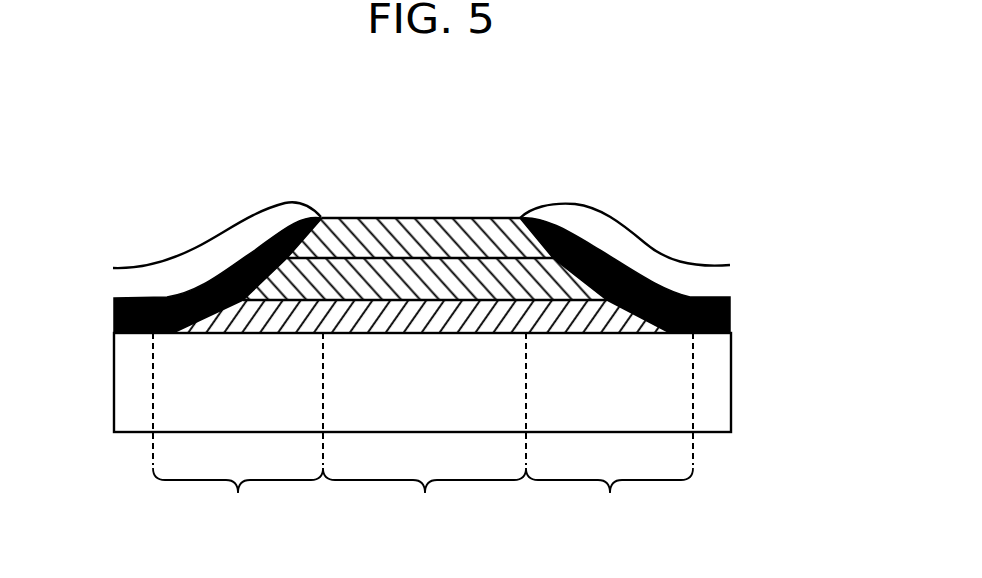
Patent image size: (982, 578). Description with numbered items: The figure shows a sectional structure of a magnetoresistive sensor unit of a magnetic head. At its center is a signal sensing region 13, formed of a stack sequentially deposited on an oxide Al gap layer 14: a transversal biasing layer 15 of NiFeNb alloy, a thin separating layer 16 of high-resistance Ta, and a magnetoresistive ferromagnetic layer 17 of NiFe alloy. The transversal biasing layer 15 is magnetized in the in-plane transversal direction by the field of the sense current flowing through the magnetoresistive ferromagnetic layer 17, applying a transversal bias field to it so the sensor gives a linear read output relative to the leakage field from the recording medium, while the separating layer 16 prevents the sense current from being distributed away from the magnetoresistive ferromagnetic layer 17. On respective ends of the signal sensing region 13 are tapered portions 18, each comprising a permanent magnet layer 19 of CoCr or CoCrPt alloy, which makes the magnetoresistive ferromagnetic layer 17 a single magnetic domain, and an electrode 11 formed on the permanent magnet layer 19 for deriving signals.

The electrodes 11 is at (233, 247).
The signal sensing region 13 is at (424, 502).
The oxide Al gap layer 14 is at (715, 383).
The transversal biasing layer 15 is at (477, 317).
The separating layer 16 is at (416, 275).
The magnetoresistive ferromagnetic layer 17 is at (375, 235).
The tapered portions 18 is at (423, 434).
The permanent magnet layers 19 is at (203, 282).